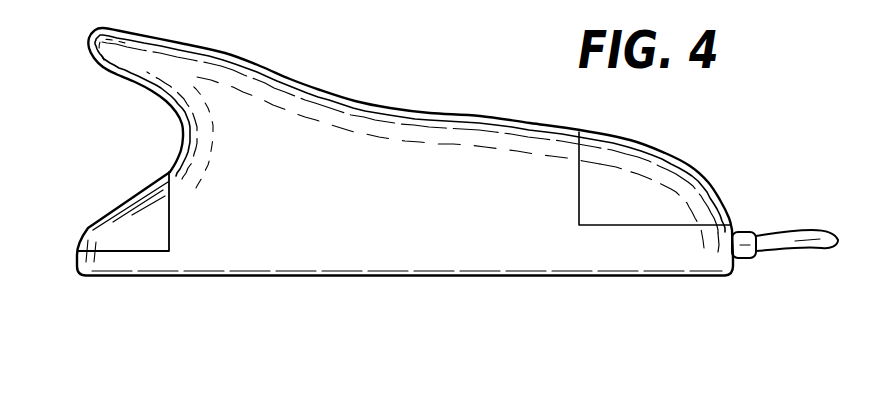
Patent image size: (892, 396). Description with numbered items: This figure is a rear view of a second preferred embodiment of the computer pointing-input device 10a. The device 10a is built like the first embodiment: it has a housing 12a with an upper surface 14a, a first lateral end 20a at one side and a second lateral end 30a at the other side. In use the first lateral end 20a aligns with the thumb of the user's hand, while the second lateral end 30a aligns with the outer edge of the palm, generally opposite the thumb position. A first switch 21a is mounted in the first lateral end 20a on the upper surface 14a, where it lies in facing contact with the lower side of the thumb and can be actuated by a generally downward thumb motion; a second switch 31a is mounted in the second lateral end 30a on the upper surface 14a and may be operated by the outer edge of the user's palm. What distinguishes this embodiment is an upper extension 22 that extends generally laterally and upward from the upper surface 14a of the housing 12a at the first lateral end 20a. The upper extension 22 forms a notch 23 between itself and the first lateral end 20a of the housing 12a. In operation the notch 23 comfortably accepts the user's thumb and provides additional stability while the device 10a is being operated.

The computer pointing-input device 10a is at (370, 283).
The housing 12a is at (573, 122).
The upper surface 14a is at (470, 113).
The first lateral end 20a is at (138, 285).
The first switch 21a is at (132, 207).
The upper extension 22 is at (201, 45).
The notch 23 is at (90, 97).
The second lateral end 30a is at (640, 283).
The second switch 31a is at (717, 195).